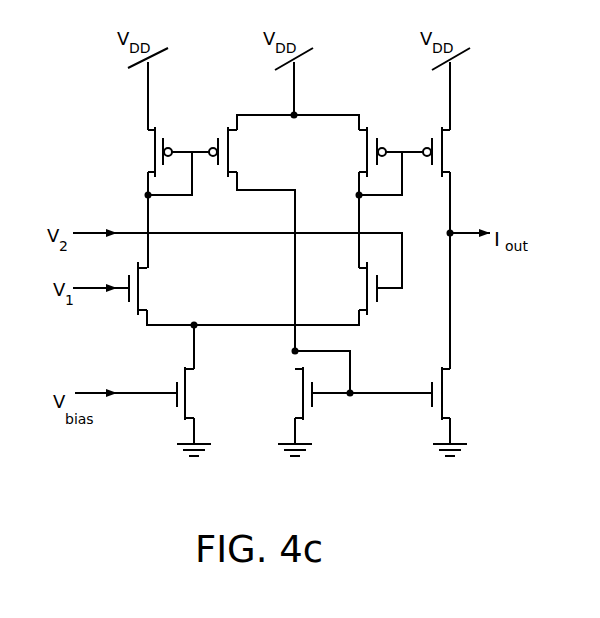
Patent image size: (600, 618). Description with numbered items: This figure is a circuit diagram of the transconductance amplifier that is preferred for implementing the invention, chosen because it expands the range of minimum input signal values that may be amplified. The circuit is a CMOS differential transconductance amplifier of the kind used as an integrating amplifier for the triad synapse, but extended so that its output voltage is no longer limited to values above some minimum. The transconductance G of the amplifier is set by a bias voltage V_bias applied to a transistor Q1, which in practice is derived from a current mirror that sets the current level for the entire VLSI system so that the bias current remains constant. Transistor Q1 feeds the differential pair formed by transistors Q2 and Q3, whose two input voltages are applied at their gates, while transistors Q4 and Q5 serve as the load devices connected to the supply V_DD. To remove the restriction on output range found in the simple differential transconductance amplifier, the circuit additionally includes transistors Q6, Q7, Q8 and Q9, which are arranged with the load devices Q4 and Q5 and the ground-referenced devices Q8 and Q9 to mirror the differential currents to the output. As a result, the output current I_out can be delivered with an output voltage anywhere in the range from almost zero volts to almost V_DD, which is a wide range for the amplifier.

The transistor Q1 is at (195, 393).
The differential input transistor Q2 is at (147, 288).
The differential input transistor Q3 is at (354, 288).
The current mirror load transistor Q4 is at (145, 152).
The current mirror load transistor Q5 is at (359, 152).
The transistor Q6 is at (232, 152).
The transistor Q7 is at (446, 152).
The transistor Q8 is at (291, 393).
The transistor Q9 is at (451, 393).